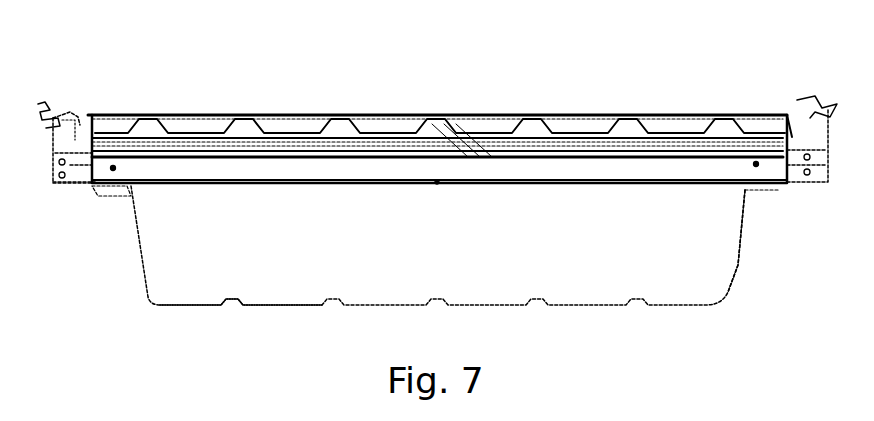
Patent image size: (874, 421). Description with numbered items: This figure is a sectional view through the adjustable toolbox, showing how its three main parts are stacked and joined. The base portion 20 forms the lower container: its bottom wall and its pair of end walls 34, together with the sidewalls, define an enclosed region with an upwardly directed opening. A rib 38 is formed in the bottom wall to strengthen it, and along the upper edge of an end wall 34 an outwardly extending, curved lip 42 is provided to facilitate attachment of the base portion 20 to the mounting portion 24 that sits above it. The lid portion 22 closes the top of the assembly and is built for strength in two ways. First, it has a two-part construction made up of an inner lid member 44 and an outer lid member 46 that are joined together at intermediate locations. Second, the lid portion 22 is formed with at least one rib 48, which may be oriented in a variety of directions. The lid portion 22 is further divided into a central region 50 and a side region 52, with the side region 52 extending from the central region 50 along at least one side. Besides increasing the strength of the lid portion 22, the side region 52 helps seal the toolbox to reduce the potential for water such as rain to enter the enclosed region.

The base portion 20 is at (593, 307).
The lid portion 22 is at (679, 106).
The mounting portion 24 is at (152, 188).
The end walls 34 is at (735, 250).
The rib 38 is at (232, 306).
The lip 42 is at (748, 188).
The inner lid member 44 is at (568, 133).
The outer lid member 46 is at (580, 110).
The rib 48 is at (504, 122).
The central region 50 is at (283, 110).
The side region 52 is at (82, 142).